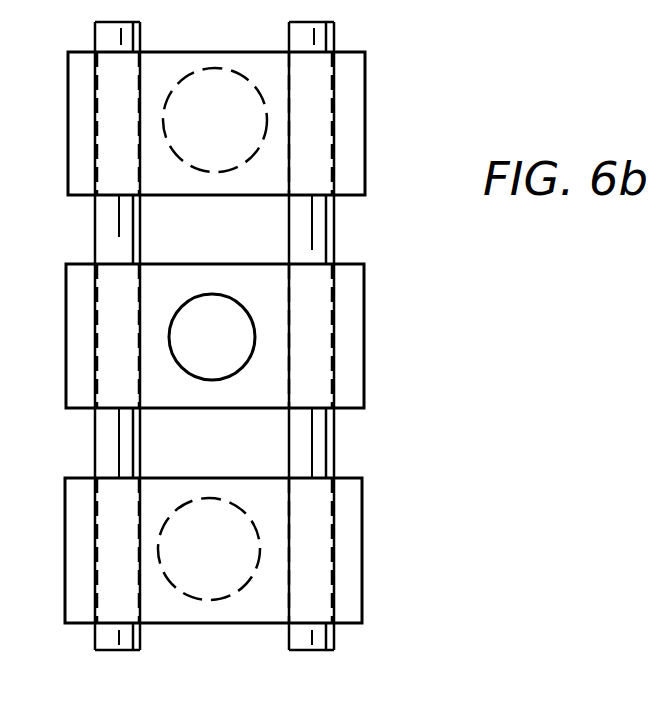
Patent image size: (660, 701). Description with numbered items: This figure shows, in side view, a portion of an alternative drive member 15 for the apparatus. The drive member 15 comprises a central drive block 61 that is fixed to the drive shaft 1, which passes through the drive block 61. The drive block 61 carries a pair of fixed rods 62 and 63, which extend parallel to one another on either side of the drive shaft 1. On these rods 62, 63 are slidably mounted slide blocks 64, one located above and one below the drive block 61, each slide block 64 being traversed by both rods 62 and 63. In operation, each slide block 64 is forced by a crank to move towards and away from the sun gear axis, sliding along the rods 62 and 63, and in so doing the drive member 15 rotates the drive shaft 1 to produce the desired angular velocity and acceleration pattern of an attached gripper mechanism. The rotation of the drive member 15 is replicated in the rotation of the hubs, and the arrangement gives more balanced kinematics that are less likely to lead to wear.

The drive shaft 1 is at (218, 308).
The drive member 15 is at (375, 163).
The drive block 61 is at (350, 372).
The fixed rod 62 is at (317, 444).
The fixed rod 63 is at (112, 445).
The slide block 64 is at (353, 101).